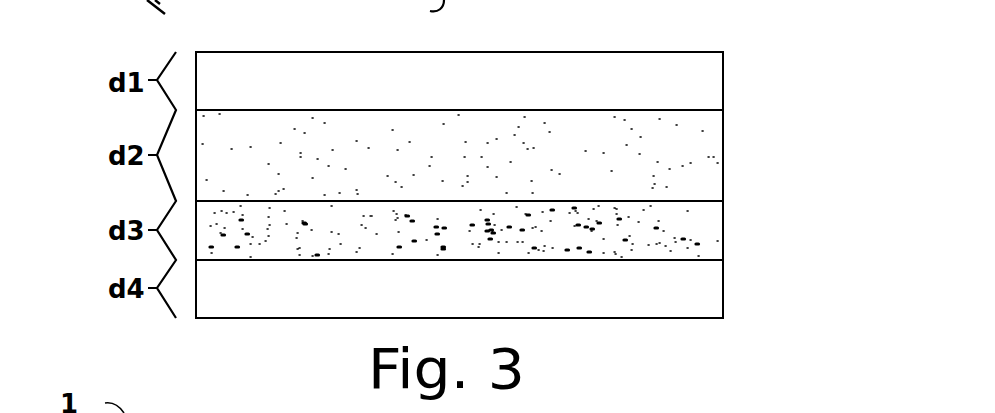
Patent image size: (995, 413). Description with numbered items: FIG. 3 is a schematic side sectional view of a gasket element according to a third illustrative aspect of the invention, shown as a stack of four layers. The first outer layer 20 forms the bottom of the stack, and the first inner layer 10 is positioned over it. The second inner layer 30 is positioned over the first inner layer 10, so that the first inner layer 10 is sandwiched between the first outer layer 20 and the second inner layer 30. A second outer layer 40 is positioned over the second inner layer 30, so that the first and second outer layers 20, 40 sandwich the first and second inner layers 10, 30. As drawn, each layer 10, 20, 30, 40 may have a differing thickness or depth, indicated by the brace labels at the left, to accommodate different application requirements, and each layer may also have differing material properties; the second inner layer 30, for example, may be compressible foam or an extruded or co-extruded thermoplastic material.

The second outer layer 40 is at (723, 80).
The second inner layer 30 is at (723, 155).
The first inner layer 10 is at (723, 232).
The first outer layer 20 is at (723, 288).